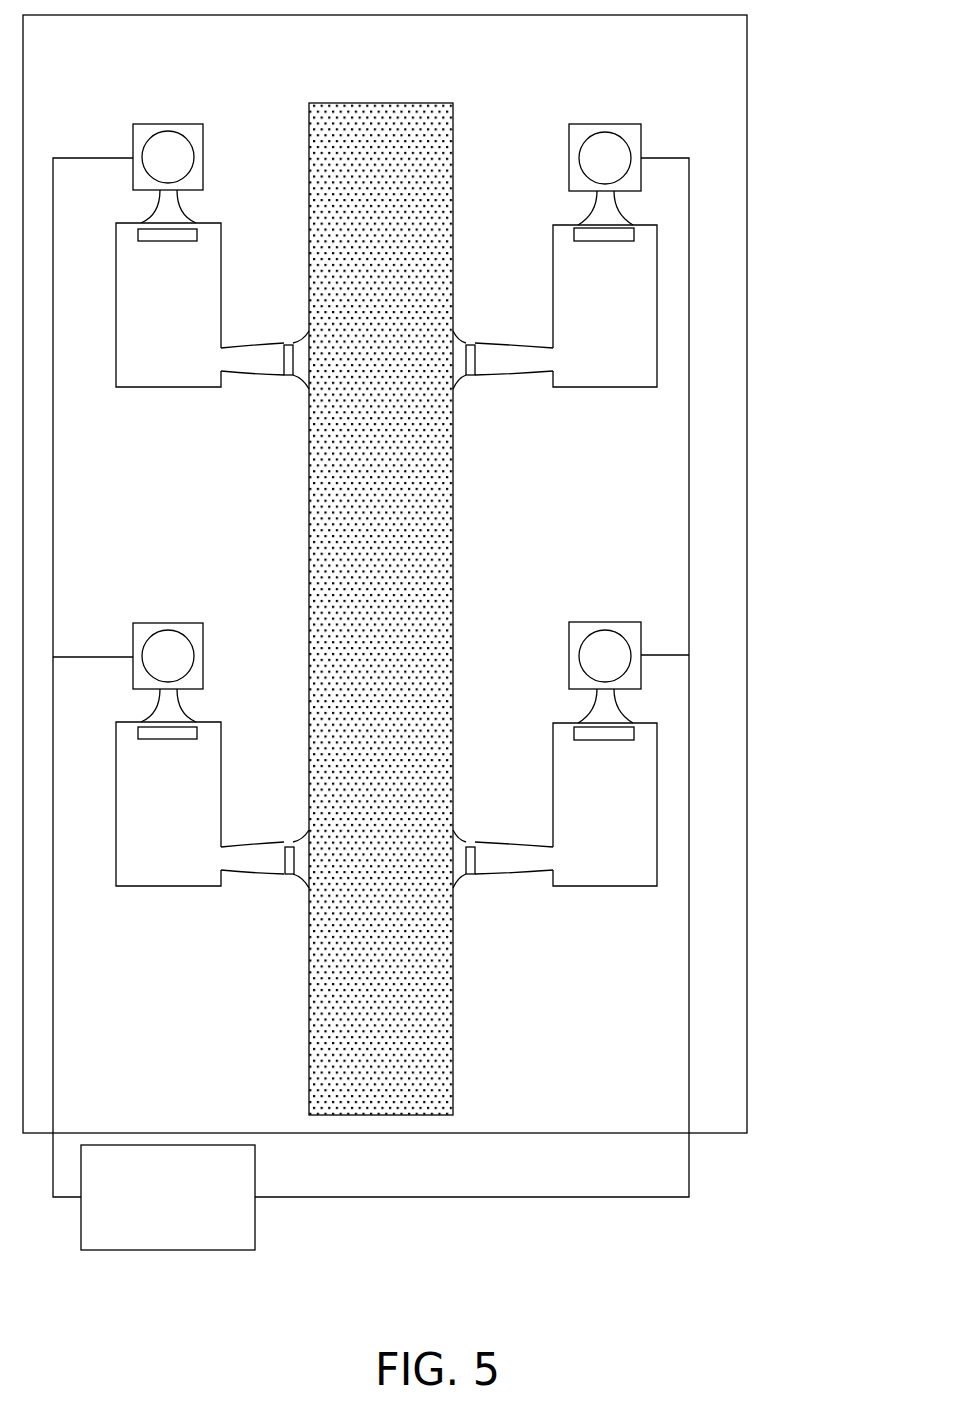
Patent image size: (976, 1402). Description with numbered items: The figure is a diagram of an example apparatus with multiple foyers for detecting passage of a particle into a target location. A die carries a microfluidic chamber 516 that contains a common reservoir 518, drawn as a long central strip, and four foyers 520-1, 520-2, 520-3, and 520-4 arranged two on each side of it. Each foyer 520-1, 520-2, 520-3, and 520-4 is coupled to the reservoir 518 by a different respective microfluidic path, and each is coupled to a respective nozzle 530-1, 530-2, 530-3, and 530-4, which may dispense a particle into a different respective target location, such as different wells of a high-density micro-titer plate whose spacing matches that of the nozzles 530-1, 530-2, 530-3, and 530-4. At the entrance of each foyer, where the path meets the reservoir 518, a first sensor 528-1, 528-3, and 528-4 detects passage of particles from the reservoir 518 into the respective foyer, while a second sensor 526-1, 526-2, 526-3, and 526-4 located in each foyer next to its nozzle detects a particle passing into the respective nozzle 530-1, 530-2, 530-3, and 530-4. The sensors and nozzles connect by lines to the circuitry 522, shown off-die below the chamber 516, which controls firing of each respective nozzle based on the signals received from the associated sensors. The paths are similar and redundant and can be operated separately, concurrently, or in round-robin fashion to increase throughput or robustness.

The microfluidic chamber 516 is at (747, 77).
The reservoir 518 is at (309, 106).
The foyer 520-1 is at (553, 784).
The foyer 520-2 is at (223, 770).
The foyer 520-3 is at (221, 274).
The foyer 520-4 is at (553, 262).
The circuitry 522 is at (255, 1168).
The second sensor 526-1 is at (574, 735).
The second sensor 526-2 is at (205, 735).
The second sensor 526-3 is at (197, 235).
The second sensor 526-4 is at (574, 236).
The first sensor 528-1 is at (289, 899).
The first sensor 528-3 is at (286, 400).
The first sensor 528-4 is at (476, 400).
The nozzle 530-1 is at (569, 652).
The nozzle 530-2 is at (205, 668).
The nozzle 530-3 is at (203, 167).
The nozzle 530-4 is at (569, 164).